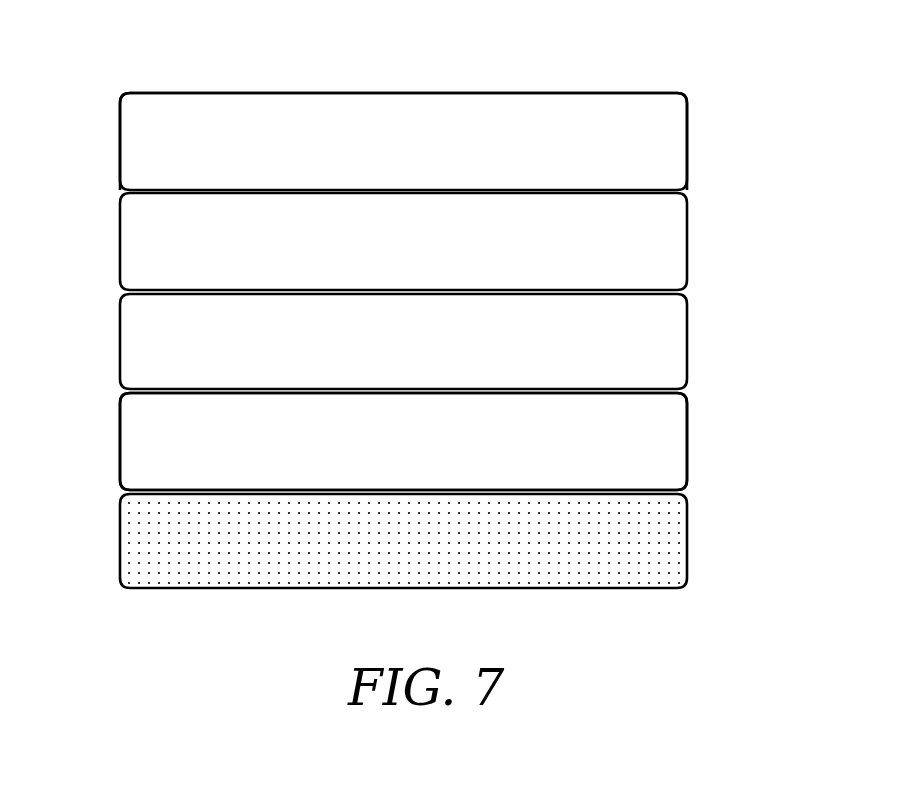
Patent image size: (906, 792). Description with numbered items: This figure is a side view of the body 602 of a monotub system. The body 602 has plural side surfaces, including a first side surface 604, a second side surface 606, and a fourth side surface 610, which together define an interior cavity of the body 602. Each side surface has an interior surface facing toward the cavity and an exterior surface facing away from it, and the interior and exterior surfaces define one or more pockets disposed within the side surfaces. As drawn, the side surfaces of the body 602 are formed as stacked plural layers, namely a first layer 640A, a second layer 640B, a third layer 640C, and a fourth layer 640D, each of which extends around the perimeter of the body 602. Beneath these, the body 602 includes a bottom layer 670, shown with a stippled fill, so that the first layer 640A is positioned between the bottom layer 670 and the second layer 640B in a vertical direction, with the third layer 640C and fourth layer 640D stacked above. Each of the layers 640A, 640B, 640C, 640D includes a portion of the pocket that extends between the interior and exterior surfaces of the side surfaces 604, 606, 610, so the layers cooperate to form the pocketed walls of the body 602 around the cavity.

The body 602 is at (632, 47).
The second side surface 606 is at (724, 92).
The first side surface 604 is at (108, 142).
The fourth layer 640D is at (687, 143).
The third layer 640C is at (687, 242).
The second layer 640B is at (687, 343).
The first layer 640A is at (687, 443).
The fourth side surface 610 is at (140, 442).
The bottom layer 670 is at (687, 540).